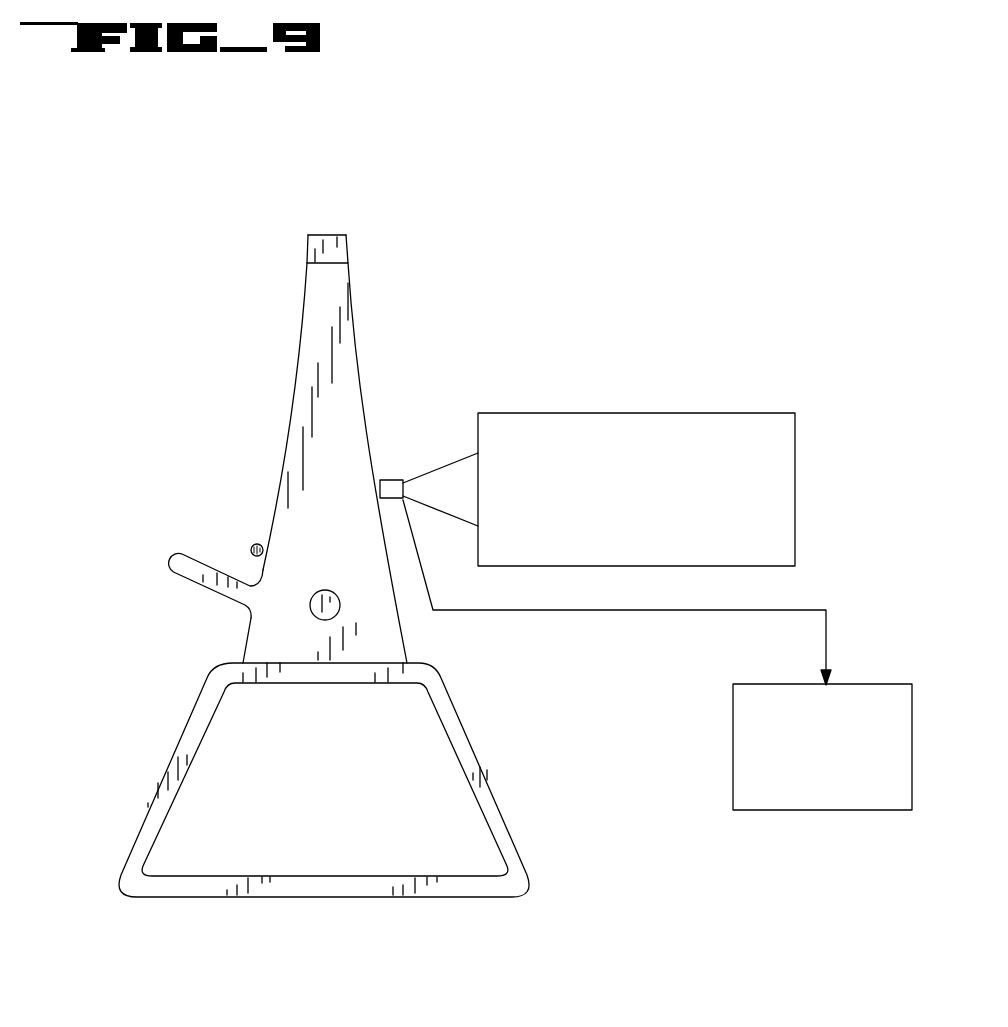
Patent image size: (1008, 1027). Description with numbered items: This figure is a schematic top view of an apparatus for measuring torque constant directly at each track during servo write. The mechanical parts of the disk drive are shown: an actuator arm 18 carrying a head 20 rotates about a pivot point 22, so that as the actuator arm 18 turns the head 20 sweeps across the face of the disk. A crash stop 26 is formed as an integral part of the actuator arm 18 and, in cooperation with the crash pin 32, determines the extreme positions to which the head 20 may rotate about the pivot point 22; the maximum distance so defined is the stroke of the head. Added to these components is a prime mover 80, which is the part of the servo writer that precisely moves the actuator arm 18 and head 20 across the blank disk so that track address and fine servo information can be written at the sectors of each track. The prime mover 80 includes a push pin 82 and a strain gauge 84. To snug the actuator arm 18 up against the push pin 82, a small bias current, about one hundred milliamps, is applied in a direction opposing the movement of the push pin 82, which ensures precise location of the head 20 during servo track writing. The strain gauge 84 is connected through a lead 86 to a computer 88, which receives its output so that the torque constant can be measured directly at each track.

The actuator arm 18 is at (292, 398).
The head 20 is at (311, 250).
The pivot point 22 is at (328, 607).
The crash stop 26 is at (173, 570).
The crash pin 32 is at (521, 832).
The prime mover 80 is at (725, 413).
The push pin 82 is at (450, 450).
The strain gauge 84 is at (394, 480).
The lead 86 is at (690, 611).
The computer 88 is at (834, 811).